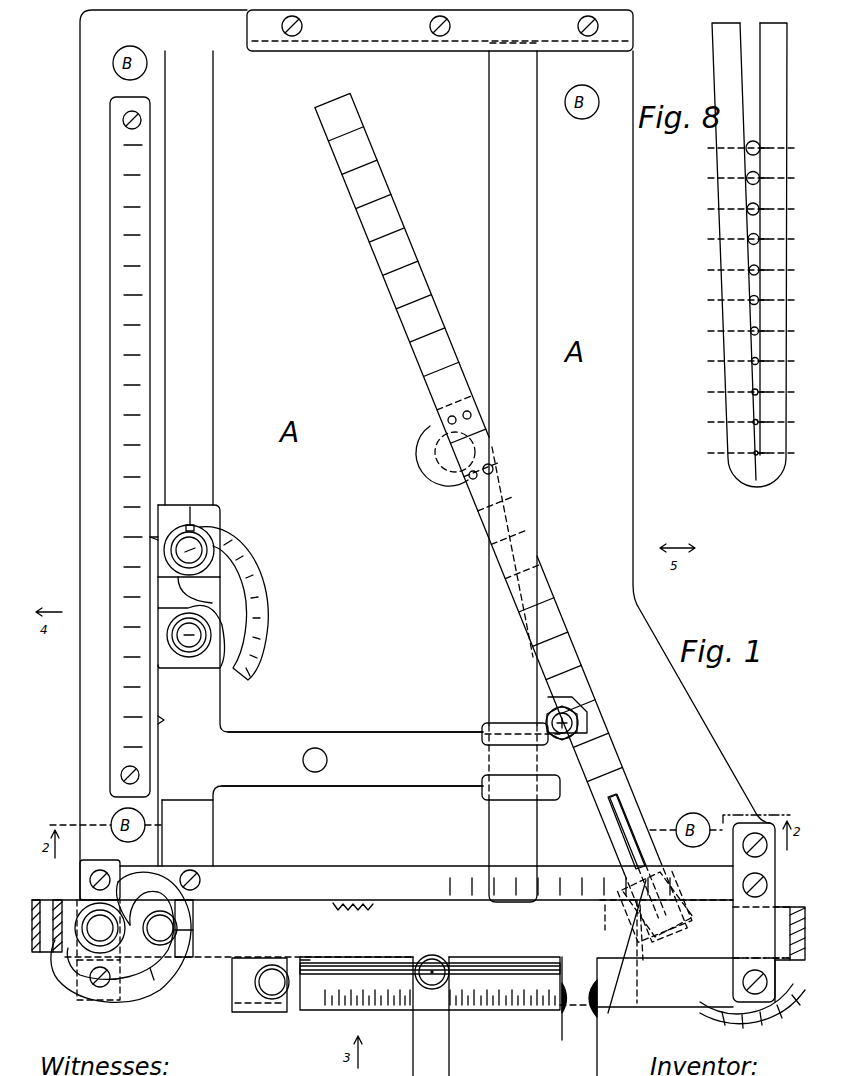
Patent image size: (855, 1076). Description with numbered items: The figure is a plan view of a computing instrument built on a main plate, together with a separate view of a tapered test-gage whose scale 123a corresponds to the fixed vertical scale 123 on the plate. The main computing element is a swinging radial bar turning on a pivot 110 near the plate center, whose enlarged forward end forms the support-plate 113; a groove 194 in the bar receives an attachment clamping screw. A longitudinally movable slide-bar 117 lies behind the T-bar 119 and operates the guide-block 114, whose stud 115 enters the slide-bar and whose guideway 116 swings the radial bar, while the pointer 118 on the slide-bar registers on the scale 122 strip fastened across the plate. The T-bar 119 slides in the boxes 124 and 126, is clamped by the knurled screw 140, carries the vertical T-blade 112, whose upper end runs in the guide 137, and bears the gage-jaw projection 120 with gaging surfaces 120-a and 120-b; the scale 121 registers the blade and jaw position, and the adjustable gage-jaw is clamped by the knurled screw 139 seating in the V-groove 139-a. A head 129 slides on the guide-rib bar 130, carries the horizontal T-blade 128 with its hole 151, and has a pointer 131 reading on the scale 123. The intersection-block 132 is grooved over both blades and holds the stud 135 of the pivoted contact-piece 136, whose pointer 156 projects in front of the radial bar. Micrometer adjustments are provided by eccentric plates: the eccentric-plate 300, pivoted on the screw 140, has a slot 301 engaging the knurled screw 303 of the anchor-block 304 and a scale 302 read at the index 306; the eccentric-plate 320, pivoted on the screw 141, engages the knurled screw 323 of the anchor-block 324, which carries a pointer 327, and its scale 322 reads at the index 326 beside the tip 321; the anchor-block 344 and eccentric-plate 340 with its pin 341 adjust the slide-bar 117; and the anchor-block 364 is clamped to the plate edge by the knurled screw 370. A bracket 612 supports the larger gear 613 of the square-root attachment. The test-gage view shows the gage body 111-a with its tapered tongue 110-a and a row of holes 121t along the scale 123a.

In FIG. 1, the guide 137 is at (440, 30).
In FIG. 1, the vertical fixed scale 123 is at (110, 400).
In FIG. 1, the fixed guide-rib bar 130 is at (189, 278).
In FIG. 1, the head 129 is at (189, 685).
In FIG. 1, the pointer 131 is at (157, 720).
In FIG. 1, the projecting pointer 327 is at (158, 537).
In FIG. 1, the anchor-block 324 is at (210, 520).
In FIG. 1, the knurled screw 323 is at (196, 545).
In FIG. 1, the index 326 is at (192, 512).
In FIG. 1, the graduated scale 322 is at (253, 604).
In FIG. 1, the eccentric-plate 320 is at (228, 670).
In FIG. 1, the cam tip 321 is at (244, 672).
In FIG. 1, the screw 141 is at (189, 635).
In FIG. 1, the hole 151 is at (325, 750).
In FIG. 1, the horizontal T-blade 128 is at (352, 759).
In FIG. 1, the vertical T-blade 112 is at (513, 472).
In FIG. 1, the pivot 110 is at (447, 442).
In FIG. 1, the support-plate 113 is at (440, 478).
In FIG. 1, the groove 194 is at (624, 812).
In FIG. 1, the guideway 116 is at (668, 924).
In FIG. 1, the stud 115 is at (640, 1005).
In FIG. 1, the pointer or index 118 is at (622, 958).
In FIG. 1, the stud 135 is at (580, 722).
In FIG. 1, the pointer 156 is at (580, 698).
In FIG. 1, the pivoted contact-piece 136 is at (546, 716).
In FIG. 1, the intersection-block 132 is at (485, 798).
In FIG. 1, the scale 122 is at (578, 858).
In FIG. 1, the guide-block 114 is at (688, 890).
In FIG. 1, the slide-bar 117 is at (36, 898).
In FIG. 1, the box 126 is at (118, 888).
In FIG. 1, the eccentric-plate 300 is at (62, 990).
In FIG. 1, the knurled screw 140 is at (88, 930).
In FIG. 1, the slot 301 is at (128, 1000).
In FIG. 1, the graduated scale 302 is at (158, 985).
In FIG. 1, the knurled screw 303 is at (160, 928).
In FIG. 1, the anchor-block 304 is at (193, 910).
In FIG. 1, the index 306 is at (185, 934).
In FIG. 1, the anchor-block 364 is at (236, 1010).
In FIG. 1, the knurled screw 370 is at (272, 998).
In FIG. 1, the bracket 612 is at (305, 956).
In FIG. 1, the larger gear 613 is at (372, 908).
In FIG. 1, the scale 121 is at (430, 994).
In FIG. 1, the V-groove 139-a is at (355, 962).
In FIG. 1, the T-bar 119 is at (423, 1002).
In FIG. 1, the knurled screw 139 is at (436, 966).
In FIG. 1, the gage-jaw projection 120 is at (580, 1011).
In FIG. 1, the gaging-surface 120-a is at (558, 1023).
In FIG. 1, the gaging-surface 120-b is at (603, 1024).
In FIG. 1, the box 124 is at (733, 965).
In FIG. 1, the anchor-block 344 is at (795, 906).
In FIG. 1, the pin 341 is at (776, 968).
In FIG. 1, the eccentric-plate 340 is at (758, 1028).
In FIG. 8, the holder 111-a is at (722, 80).
In FIG. 8, the tongue 110-a is at (752, 482).
In FIG. 8, the holes 121t is at (748, 152).
In FIG. 8, the scale 123a is at (758, 284).